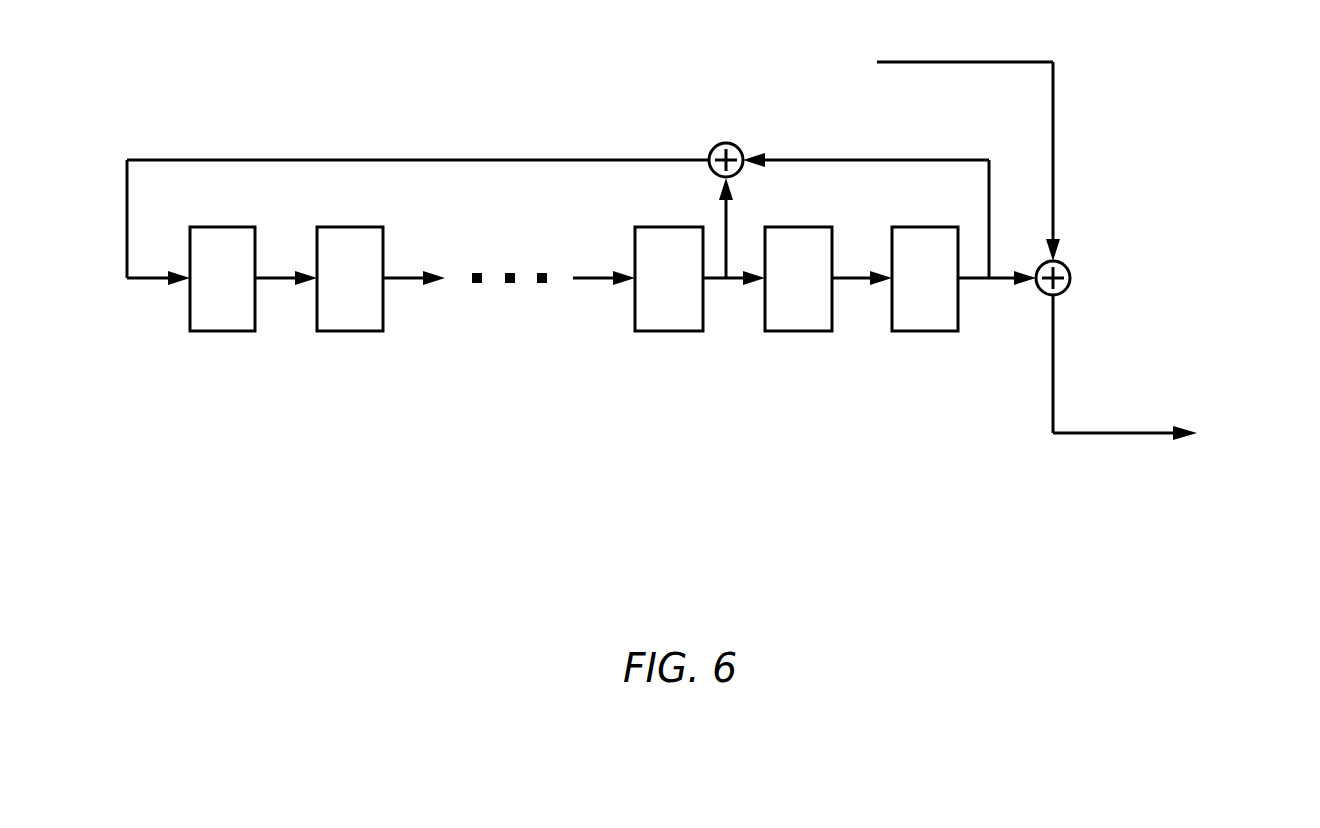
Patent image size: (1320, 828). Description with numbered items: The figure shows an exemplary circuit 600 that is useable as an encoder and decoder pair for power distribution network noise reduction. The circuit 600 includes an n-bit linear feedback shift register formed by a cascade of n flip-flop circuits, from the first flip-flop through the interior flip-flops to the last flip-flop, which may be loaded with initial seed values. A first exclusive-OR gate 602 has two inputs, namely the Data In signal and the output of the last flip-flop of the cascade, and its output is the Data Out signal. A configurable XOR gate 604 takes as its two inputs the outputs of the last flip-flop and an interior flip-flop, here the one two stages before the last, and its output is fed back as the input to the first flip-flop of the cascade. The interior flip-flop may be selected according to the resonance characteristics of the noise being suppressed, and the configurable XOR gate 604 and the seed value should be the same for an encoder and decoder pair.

The circuit 600 is at (689, 360).
The first exclusive-OR (XOR) gate 602 is at (1090, 280).
The configurable XOR gate 604 is at (725, 122).